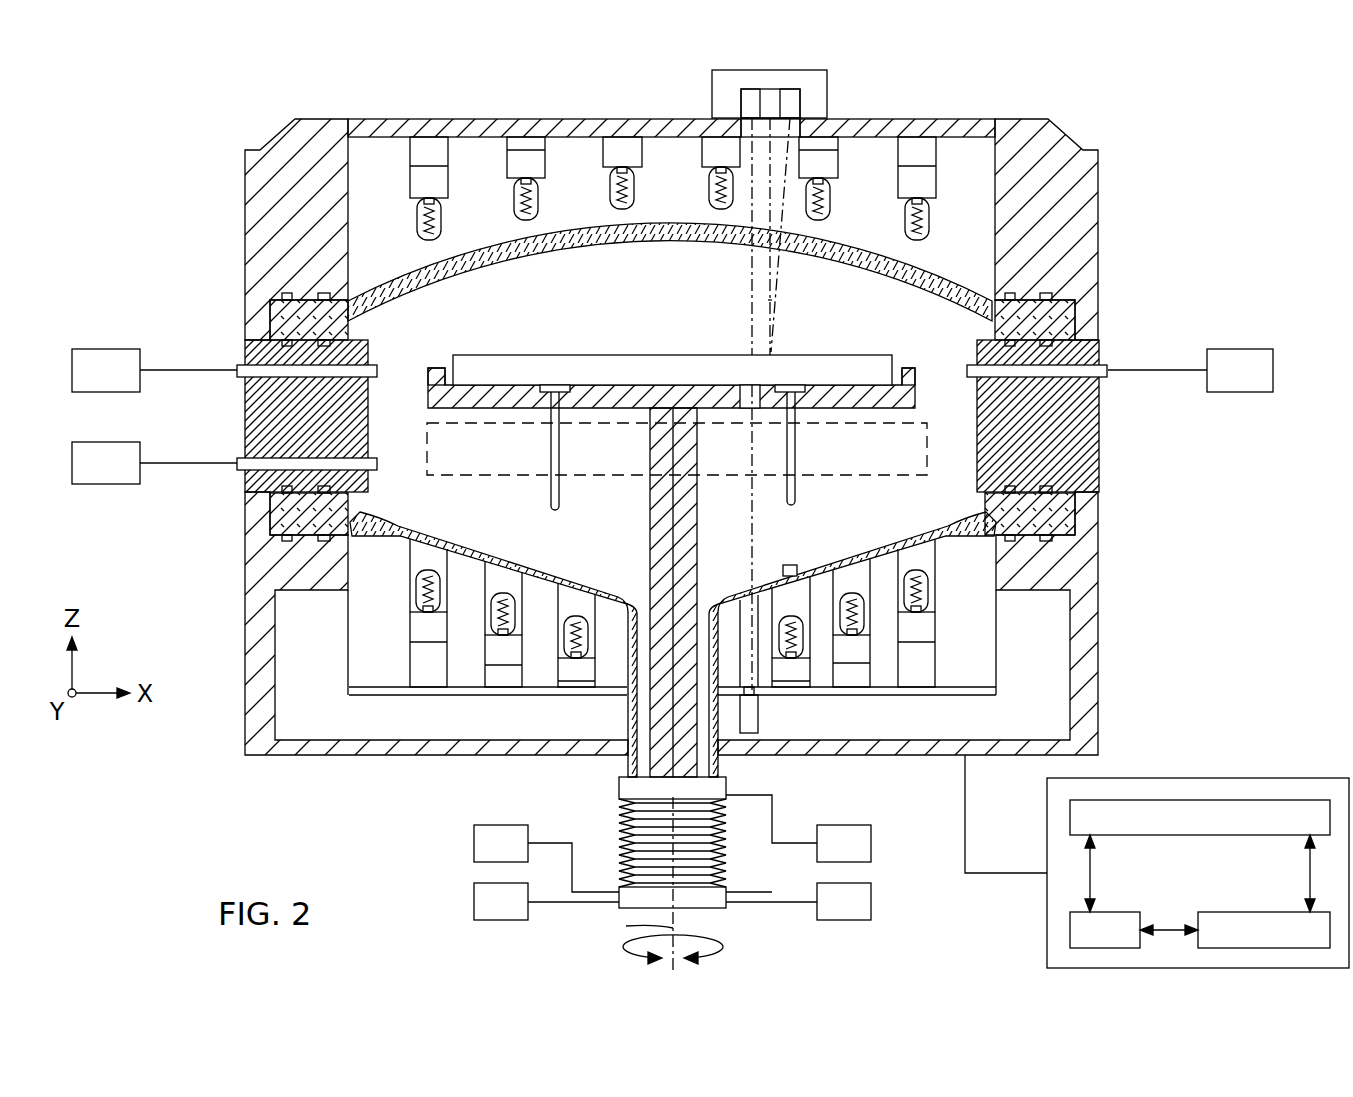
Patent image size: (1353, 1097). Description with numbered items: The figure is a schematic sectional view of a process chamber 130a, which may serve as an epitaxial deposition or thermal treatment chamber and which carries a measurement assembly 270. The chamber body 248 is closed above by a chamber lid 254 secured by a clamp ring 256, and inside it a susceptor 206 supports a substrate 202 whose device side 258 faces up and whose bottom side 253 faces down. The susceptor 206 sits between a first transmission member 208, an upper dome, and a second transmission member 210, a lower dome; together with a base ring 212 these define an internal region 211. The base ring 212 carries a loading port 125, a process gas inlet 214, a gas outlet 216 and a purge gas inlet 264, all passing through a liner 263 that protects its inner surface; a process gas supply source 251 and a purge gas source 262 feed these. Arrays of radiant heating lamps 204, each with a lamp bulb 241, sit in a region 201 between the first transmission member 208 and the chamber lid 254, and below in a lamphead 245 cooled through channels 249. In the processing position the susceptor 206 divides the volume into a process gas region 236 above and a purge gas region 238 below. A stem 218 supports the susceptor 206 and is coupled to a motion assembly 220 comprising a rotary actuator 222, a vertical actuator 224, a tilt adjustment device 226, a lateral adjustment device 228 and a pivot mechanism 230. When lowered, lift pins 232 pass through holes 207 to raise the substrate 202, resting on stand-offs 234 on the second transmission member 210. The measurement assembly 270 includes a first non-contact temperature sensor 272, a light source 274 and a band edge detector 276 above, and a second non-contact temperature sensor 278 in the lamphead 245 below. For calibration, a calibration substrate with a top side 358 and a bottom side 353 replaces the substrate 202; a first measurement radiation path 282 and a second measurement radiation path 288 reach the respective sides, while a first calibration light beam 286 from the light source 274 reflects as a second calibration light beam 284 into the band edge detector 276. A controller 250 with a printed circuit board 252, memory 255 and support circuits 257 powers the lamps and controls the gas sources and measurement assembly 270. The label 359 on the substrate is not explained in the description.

The process chamber 130a is at (716, 466).
The region 201 is at (572, 412).
The substrate 202 is at (672, 328).
The radiant heating lamps 204 is at (418, 180).
The susceptor 206 is at (671, 369).
The holes 207 is at (766, 420).
The first transmission member 208 is at (440, 262).
The second transmission member 210 is at (475, 540).
The internal region 211 is at (670, 248).
The base ring 212 is at (274, 416).
The process gas inlet 214 is at (243, 362).
The gas outlet 216 is at (1100, 360).
The stem 218 is at (700, 555).
The motion assembly 220 is at (572, 818).
The rotary actuator 222 is at (826, 916).
The vertical actuator 224 is at (826, 858).
The tilt adjustment device 226 is at (483, 916).
The lateral adjustment device 228 is at (483, 858).
The pivot mechanism 230 is at (618, 790).
The lift pins 232 is at (560, 506).
The stand-offs 234 is at (806, 551).
The process gas region 236 is at (670, 248).
The purge gas region 238 is at (673, 633).
The lamp bulb 241 is at (520, 213).
The lamphead 245 is at (1018, 663).
The chamber body 248 is at (245, 568).
The channels 249 is at (463, 672).
The controller 250 is at (1198, 856).
The process gas supply source 251 is at (88, 385).
The printed circuit board 252 is at (1108, 912).
The bottom side 253 is at (488, 371).
The chamber lid 254 is at (985, 125).
The memory 255 is at (1300, 912).
The clamp ring 256 is at (1058, 138).
The support circuits 257 is at (1222, 385).
The device side 258 is at (878, 333).
The purge gas source 262 is at (88, 477).
The liner 263 is at (1046, 411).
The purge gas inlet 264 is at (243, 478).
The measurement assembly 270 is at (762, 86).
The first non-contact temperature sensor 272 is at (741, 108).
The light source 274 is at (775, 96).
The band edge detector 276 is at (800, 112).
The second non-contact temperature sensor 278 is at (760, 718).
The first measurement radiation path 282 is at (748, 271).
The second calibration light beam 284 is at (780, 270).
The first calibration light beam 286 is at (770, 308).
The second measurement radiation path 288 is at (752, 508).
The bottom side 353 is at (549, 447).
The top side 358 is at (860, 362).
The substrate surface 359 is at (598, 364).
The loading port 125 is at (859, 460).